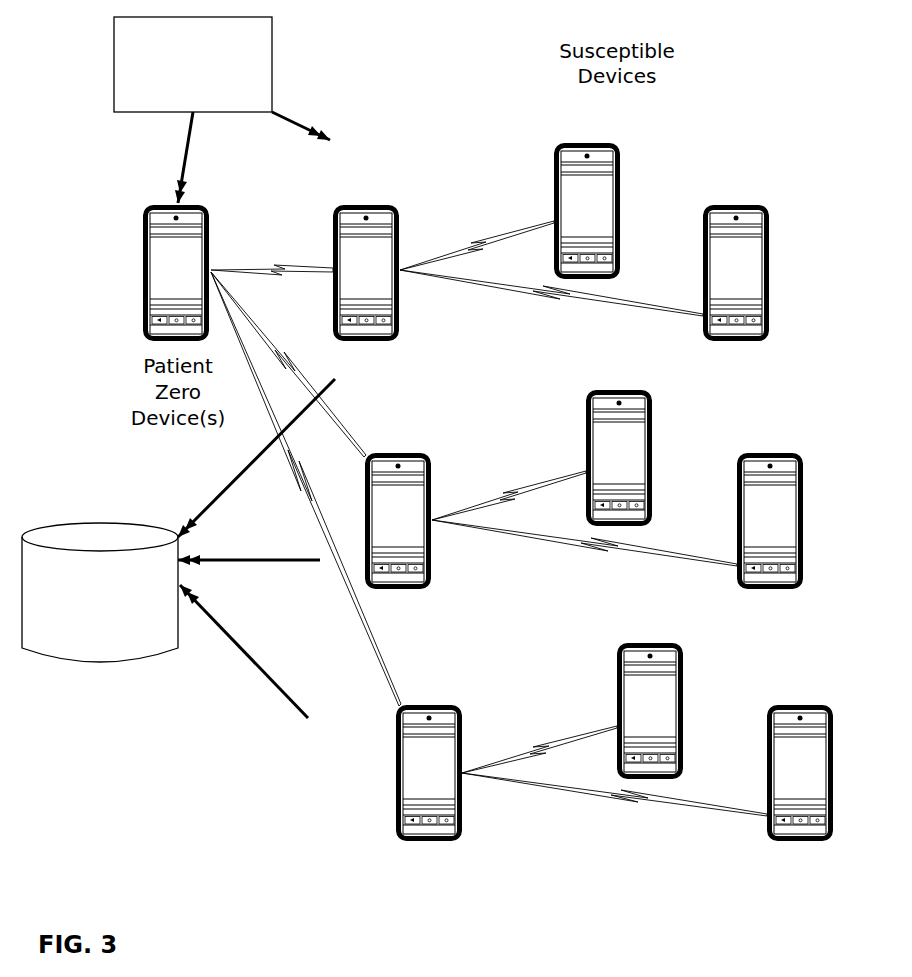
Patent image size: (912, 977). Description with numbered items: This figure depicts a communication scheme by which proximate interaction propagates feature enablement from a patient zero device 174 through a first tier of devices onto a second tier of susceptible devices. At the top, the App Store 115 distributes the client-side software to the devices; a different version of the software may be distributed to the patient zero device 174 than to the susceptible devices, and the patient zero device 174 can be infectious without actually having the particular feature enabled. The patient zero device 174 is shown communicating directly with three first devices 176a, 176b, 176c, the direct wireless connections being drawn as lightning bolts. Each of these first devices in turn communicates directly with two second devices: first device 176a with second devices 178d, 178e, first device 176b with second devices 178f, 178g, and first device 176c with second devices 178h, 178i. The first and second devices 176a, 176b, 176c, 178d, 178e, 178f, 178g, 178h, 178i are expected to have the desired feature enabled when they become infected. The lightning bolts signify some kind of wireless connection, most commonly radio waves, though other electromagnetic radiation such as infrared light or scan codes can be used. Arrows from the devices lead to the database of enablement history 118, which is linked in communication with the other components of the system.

The app store 115 is at (193, 64).
The database of enablement history 118 is at (100, 592).
The patient zero device 174 is at (143, 228).
The first device 176a is at (334, 270).
The first device 176b is at (372, 455).
The first device 176c is at (397, 757).
The second device 178d is at (554, 205).
The second device 178e is at (703, 268).
The second device 178f is at (586, 455).
The second device 178g is at (737, 520).
The second device 178h is at (617, 695).
The second device 178i is at (767, 755).